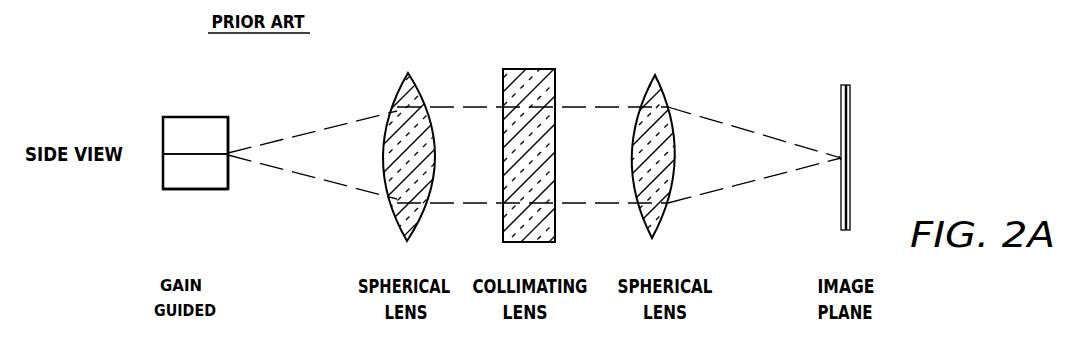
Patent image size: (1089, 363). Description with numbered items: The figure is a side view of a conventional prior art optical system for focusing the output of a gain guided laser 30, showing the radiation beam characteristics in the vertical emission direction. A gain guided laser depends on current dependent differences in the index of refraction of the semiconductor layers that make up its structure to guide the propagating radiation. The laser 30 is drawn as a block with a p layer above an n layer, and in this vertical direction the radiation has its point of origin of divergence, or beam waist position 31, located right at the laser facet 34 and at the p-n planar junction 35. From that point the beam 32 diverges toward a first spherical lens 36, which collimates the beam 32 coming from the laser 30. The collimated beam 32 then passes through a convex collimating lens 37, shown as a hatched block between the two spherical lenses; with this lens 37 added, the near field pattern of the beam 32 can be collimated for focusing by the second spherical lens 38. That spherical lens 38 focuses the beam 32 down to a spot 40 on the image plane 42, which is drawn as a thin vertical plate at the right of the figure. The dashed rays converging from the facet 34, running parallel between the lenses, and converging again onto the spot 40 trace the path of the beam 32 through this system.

The laser 30 is at (175, 110).
The beam waist position 31 is at (229, 153).
The beam 32 is at (324, 131).
The laser facet 34 is at (229, 173).
The p-n planar junction 35 is at (175, 155).
The spherical lens 36 is at (416, 83).
The collimating lens 37 is at (538, 69).
The spherical lens 38 is at (668, 96).
The spot 40 is at (841, 159).
The image plane 42 is at (851, 110).